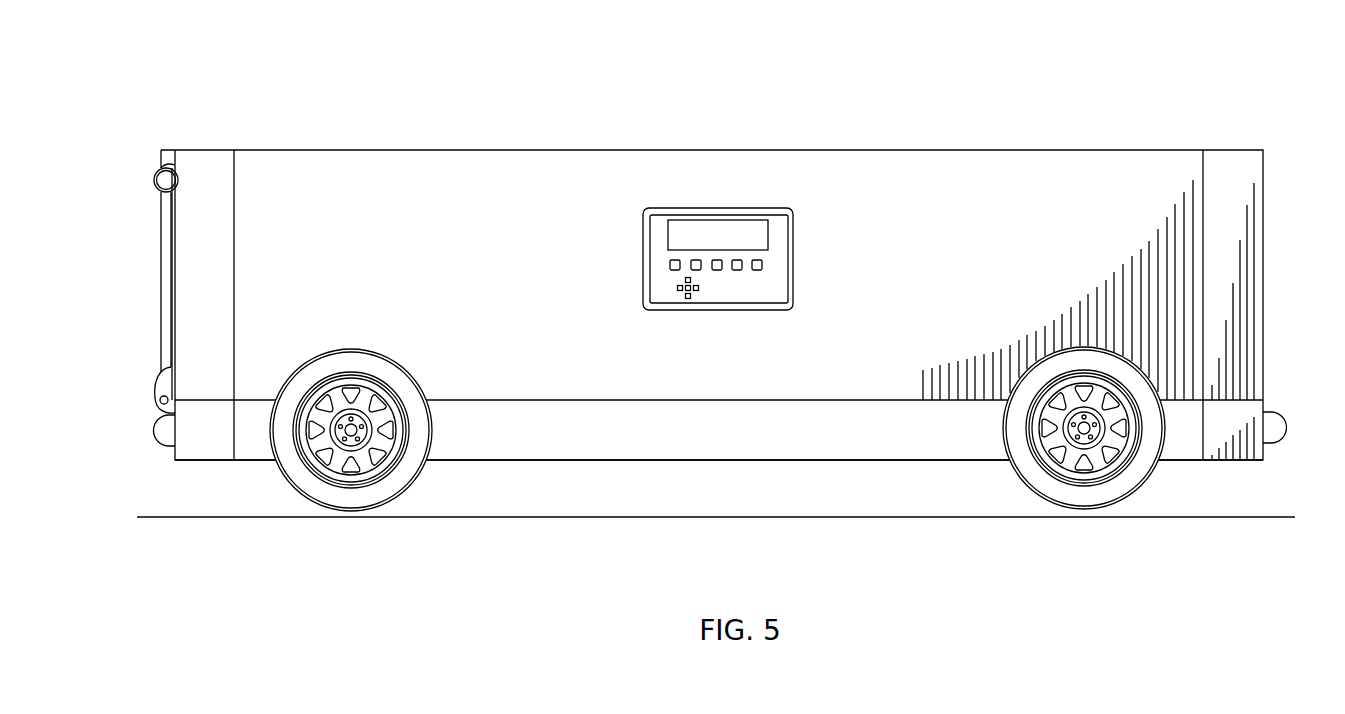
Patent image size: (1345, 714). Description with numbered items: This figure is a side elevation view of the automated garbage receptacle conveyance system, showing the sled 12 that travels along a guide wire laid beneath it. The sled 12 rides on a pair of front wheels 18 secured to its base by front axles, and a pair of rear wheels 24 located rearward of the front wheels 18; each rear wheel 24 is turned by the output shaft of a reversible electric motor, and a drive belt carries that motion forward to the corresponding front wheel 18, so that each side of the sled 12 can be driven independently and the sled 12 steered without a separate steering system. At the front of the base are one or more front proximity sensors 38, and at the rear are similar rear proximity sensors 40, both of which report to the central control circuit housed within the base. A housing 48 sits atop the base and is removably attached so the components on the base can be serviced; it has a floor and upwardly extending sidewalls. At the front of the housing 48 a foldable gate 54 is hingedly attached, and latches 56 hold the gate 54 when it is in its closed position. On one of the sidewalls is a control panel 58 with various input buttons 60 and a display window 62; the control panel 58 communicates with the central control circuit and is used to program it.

The sled 12 is at (611, 497).
The front wheels 18 is at (320, 495).
The rear wheels 24 is at (1107, 495).
The front proximity sensors 38 is at (158, 428).
The rear proximity sensors 40 is at (1277, 415).
The housing 48 is at (447, 122).
The foldable gate 54 is at (163, 253).
The latches 56 is at (158, 179).
The control panel 58 is at (681, 242).
The input buttons 60 is at (667, 263).
The display window 62 is at (743, 230).